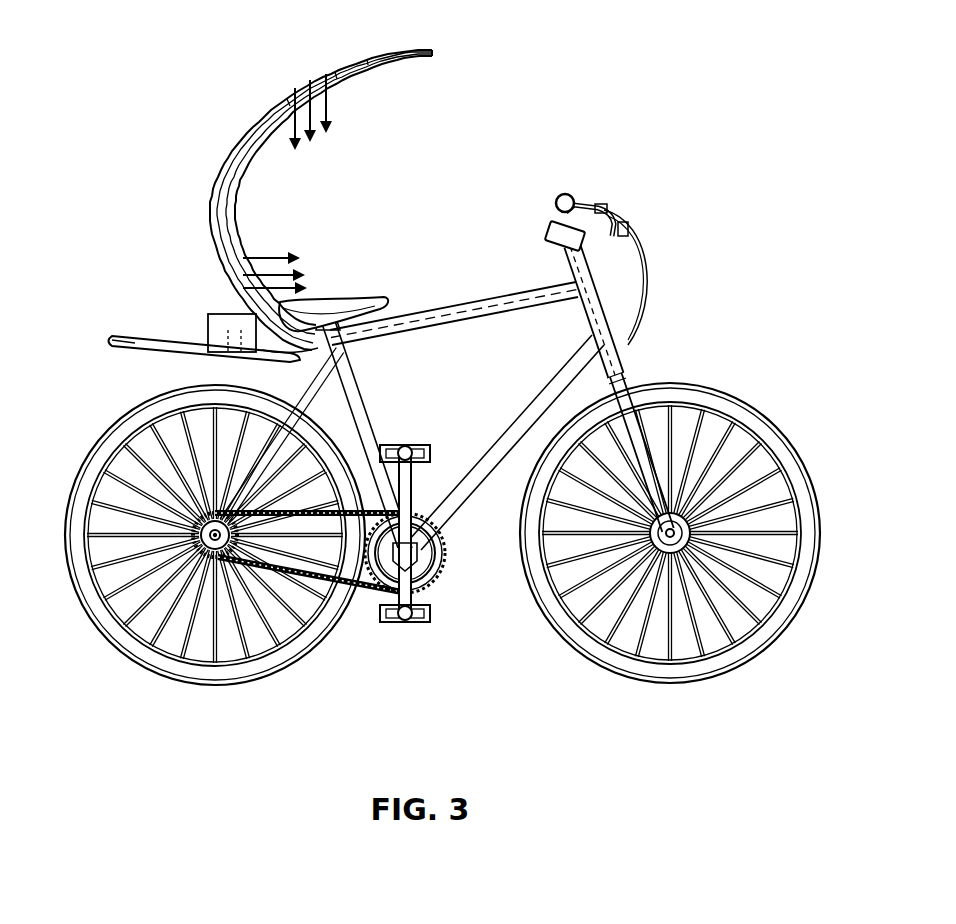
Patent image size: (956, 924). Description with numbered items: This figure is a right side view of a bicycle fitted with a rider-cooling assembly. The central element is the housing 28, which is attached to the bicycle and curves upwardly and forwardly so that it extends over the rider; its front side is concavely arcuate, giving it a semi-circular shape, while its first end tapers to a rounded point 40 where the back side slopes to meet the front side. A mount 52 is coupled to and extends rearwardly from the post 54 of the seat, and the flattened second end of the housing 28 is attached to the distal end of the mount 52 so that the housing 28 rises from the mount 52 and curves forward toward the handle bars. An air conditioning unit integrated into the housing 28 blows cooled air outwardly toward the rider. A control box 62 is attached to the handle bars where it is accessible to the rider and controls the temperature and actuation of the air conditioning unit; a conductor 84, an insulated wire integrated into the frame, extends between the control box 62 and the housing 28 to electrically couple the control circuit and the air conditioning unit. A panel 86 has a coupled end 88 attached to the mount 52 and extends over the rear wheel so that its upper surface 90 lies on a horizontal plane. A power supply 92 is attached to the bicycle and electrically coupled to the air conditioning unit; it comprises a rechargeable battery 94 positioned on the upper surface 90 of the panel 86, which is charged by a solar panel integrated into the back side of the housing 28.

The housing 28 is at (240, 124).
The rounded point 40 is at (442, 50).
The mount 52 is at (300, 320).
The post 54 is at (383, 327).
The control box 62 is at (553, 240).
The conductor 84 is at (517, 300).
The panel 86 is at (112, 340).
The coupled end 88 is at (265, 350).
The upper surface 90 is at (130, 342).
The power supply 92 is at (205, 298).
The rechargeable battery 94 is at (210, 333).